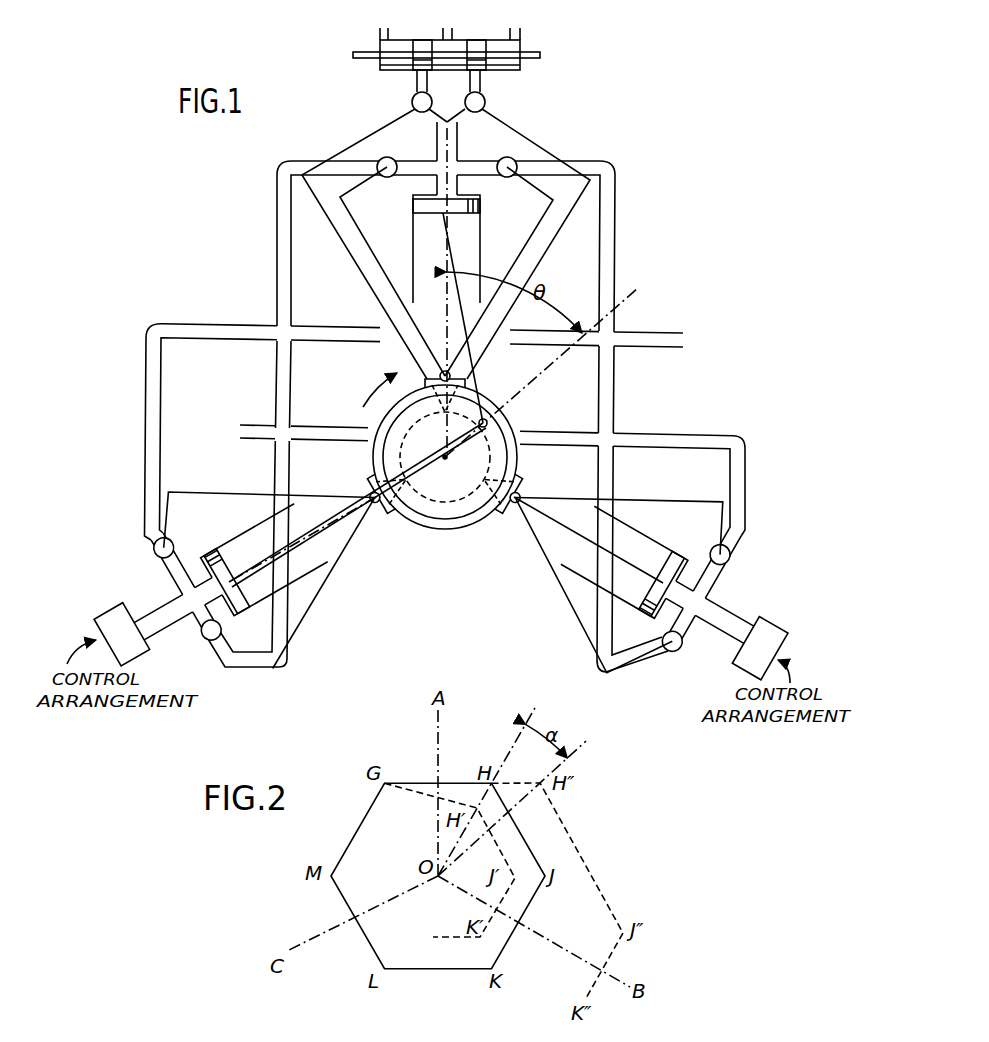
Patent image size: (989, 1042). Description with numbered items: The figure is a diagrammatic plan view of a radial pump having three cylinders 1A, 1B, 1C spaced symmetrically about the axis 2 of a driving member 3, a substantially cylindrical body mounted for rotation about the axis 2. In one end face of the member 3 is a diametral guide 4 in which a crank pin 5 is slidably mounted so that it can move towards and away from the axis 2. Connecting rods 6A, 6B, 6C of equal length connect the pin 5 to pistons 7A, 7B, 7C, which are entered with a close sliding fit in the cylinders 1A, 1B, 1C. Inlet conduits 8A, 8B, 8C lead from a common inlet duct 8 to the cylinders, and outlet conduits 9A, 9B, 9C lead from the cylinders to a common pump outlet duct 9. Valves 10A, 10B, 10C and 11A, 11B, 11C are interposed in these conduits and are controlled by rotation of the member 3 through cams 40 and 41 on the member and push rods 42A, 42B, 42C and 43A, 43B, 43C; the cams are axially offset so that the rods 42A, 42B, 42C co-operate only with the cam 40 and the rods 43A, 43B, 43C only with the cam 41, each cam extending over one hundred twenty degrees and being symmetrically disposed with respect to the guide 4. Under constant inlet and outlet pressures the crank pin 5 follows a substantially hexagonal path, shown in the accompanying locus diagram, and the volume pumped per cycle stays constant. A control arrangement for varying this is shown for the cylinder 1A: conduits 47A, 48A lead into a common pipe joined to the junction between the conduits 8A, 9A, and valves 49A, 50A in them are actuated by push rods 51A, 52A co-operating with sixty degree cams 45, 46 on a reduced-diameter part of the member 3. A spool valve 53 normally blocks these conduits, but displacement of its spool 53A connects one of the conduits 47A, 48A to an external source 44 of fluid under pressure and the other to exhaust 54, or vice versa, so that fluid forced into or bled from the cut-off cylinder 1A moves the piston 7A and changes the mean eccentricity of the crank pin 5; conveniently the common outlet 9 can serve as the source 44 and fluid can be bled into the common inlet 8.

The cylinder 1A is at (481, 258).
The cylinder 1B is at (646, 608).
The cylinder 1C is at (238, 604).
The axis 2 is at (447, 458).
The driving member 3 is at (410, 500).
The diametral guide 4 is at (386, 496).
The crank pin 5 is at (500, 413).
The connecting rod 6A is at (461, 307).
The connecting rod 6B is at (568, 504).
The connecting rod 6C is at (330, 513).
The piston 7A is at (485, 210).
The piston 7B is at (657, 549).
The piston 7C is at (277, 522).
The common inlet duct 8 is at (671, 332).
The common pump outlet duct 9 is at (252, 426).
The inlet conduit 8A is at (597, 160).
The inlet conduit 8B is at (665, 665).
The inlet conduit 8C is at (155, 535).
The outlet conduit 9A is at (300, 160).
The outlet conduit 9B is at (745, 526).
The outlet conduit 9C is at (234, 662).
The valve 10A is at (505, 157).
The valve 10B is at (681, 643).
The valve 10C is at (167, 557).
The valve 11A is at (389, 177).
The valve 11B is at (730, 563).
The valve 11C is at (206, 634).
The cam 40 is at (361, 407).
The cam 41 is at (446, 531).
The push rod 42A is at (533, 233).
The push rod 42B is at (538, 556).
The push rod 42C is at (205, 490).
The push rod 43A is at (370, 251).
The push rod 43B is at (580, 500).
The push rod 43C is at (323, 593).
The external source of fluid under pressure 44 is at (450, 28).
The cam 45 is at (452, 378).
The cam 46 is at (427, 504).
The conduit 47A is at (470, 84).
The conduit 48A is at (416, 82).
The valve 49A is at (485, 99).
The valve 50A is at (412, 101).
The push rod 51A is at (555, 238).
The push rod 52A is at (356, 268).
The spool valve 53 is at (418, 22).
The spool 53A is at (354, 52).
The exhaust 54 is at (380, 28).